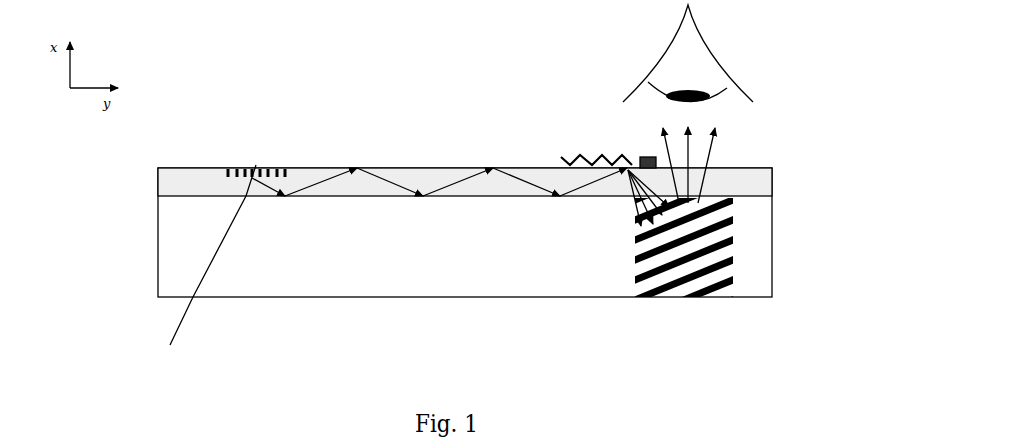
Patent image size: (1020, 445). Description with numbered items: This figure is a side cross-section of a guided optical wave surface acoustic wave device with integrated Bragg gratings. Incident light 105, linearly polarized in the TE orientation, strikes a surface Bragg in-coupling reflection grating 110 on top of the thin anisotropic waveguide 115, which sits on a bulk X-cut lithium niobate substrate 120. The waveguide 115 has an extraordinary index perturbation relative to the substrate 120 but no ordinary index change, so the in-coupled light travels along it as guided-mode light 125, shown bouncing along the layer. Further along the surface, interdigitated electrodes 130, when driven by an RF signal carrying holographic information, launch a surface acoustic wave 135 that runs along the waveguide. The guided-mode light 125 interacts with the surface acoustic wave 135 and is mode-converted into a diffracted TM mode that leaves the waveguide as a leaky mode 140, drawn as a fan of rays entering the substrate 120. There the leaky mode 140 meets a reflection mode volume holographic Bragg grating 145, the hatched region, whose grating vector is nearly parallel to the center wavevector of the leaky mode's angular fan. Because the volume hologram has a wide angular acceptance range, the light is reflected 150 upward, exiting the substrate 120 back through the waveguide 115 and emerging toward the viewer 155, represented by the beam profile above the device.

The incident light 105 is at (183, 322).
The Bragg in-coupling reflection grating 110 is at (250, 165).
The anisotropic waveguide 115 is at (177, 183).
The substrate 120 is at (173, 262).
The guided-mode light 125 is at (398, 186).
The interdigitated electrodes 130 is at (647, 157).
The surface acoustic wave 135 is at (567, 157).
The leaky mode 140 is at (635, 204).
The reflection mode volume holographic Bragg grating 145 is at (712, 288).
The reflected leaky mode 150 is at (717, 146).
The viewer 155 is at (707, 58).